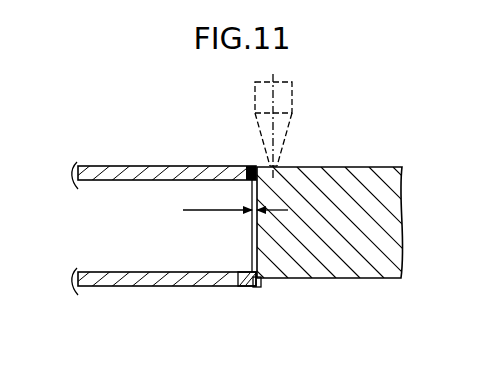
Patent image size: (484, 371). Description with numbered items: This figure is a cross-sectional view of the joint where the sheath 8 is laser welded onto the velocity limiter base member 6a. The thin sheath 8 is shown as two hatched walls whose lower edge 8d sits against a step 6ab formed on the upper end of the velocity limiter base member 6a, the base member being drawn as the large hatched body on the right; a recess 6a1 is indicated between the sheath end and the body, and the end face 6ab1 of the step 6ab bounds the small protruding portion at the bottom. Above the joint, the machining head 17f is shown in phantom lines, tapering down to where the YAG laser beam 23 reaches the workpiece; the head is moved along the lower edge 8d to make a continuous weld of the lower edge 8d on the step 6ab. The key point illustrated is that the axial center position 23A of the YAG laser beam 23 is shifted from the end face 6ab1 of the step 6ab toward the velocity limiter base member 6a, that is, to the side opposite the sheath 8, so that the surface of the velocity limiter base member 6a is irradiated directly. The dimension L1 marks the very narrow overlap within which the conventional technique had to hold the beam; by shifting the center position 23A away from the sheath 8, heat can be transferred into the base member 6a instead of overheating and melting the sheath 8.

The sheath 8 is at (123, 165).
The lower edge of the sheath 8d is at (257, 167).
The velocity limiter base member 6a is at (370, 282).
The recess of block 6a1 is at (286, 238).
The step of the velocity limiter base member 6ab is at (249, 284).
The end face of the step 6ab1 is at (258, 288).
The machining head 17f is at (294, 95).
The YAG laser beam 23 is at (279, 140).
The axial center position of the YAG laser beam 23A is at (275, 158).
The overlap L1 is at (235, 200).